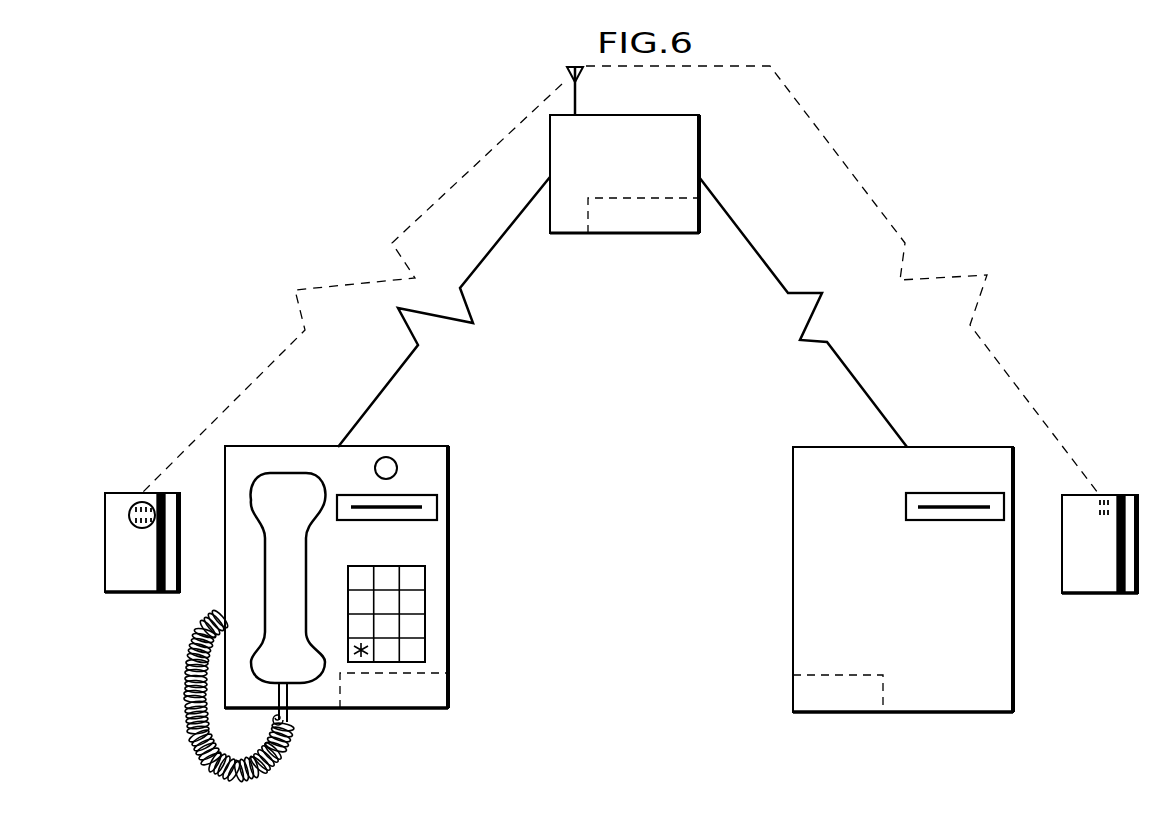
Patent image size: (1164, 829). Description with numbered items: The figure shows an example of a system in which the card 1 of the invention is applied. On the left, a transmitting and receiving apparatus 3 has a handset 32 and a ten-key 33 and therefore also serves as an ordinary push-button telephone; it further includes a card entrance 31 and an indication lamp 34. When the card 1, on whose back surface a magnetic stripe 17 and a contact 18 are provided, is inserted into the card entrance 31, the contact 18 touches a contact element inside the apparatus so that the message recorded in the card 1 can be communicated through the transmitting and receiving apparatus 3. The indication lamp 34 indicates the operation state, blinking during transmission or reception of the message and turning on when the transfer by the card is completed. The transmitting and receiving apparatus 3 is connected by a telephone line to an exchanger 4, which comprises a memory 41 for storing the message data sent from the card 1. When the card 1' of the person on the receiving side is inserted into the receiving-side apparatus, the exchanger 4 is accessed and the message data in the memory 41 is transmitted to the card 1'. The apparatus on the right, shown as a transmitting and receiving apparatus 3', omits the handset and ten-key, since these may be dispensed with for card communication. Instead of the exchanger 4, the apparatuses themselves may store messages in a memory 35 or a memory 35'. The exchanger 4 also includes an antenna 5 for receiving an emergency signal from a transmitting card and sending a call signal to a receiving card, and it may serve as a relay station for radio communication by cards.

The card 1 is at (142, 516).
The card 1' is at (1112, 523).
The magnetic stripe 17 is at (160, 594).
The contact 18 is at (131, 523).
The transmitting and receiving apparatus 3 is at (355, 557).
The transmitting and receiving apparatus 3' is at (900, 551).
The card entrance 31 is at (432, 510).
The handset 32 is at (290, 490).
The ten-key 33 is at (430, 603).
The indication lamp 34 is at (391, 446).
The memory 35 is at (394, 714).
The memory 35' is at (838, 716).
The exchanger 4 is at (612, 236).
The memory 41 is at (661, 208).
The antenna 5 is at (566, 81).